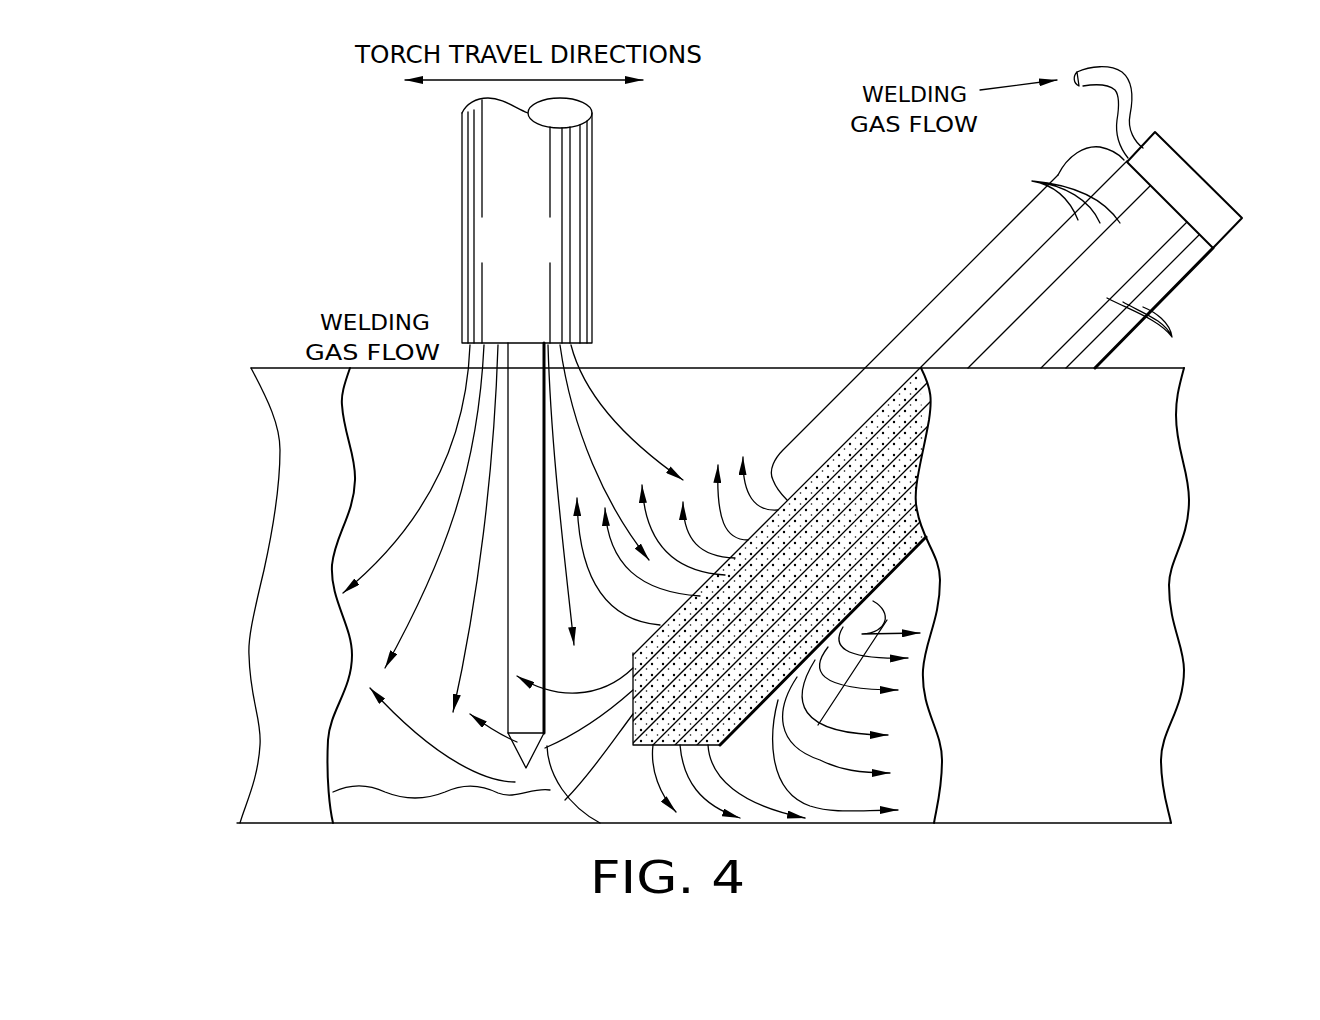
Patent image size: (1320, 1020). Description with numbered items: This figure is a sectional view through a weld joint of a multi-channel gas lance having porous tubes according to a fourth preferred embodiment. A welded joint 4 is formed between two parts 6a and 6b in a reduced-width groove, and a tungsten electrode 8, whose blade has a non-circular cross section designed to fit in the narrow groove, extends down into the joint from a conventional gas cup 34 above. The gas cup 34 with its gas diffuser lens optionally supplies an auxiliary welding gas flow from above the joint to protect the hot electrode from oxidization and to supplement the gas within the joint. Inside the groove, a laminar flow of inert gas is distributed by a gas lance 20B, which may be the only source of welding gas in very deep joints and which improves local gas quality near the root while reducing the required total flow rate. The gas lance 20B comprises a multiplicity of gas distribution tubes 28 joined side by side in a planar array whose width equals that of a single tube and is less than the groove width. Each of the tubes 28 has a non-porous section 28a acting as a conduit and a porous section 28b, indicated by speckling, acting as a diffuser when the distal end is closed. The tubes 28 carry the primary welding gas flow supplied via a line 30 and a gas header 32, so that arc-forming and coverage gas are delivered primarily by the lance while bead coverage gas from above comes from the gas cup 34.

The welded joint 4 is at (414, 815).
The part 6a is at (739, 428).
The part 6b is at (1020, 552).
The tungsten electrode 8 is at (515, 613).
The gas cup 34 is at (578, 236).
The gas lance 20B is at (926, 362).
The gas distribution tubes 28 is at (1027, 181).
The non-porous section 28a is at (947, 288).
The porous section 28b is at (760, 763).
The line 30 is at (1118, 76).
The gas header 32 is at (1223, 225).